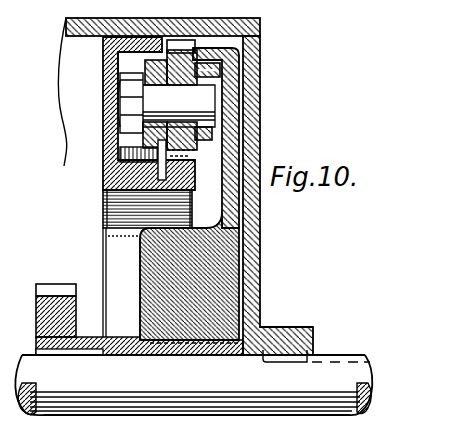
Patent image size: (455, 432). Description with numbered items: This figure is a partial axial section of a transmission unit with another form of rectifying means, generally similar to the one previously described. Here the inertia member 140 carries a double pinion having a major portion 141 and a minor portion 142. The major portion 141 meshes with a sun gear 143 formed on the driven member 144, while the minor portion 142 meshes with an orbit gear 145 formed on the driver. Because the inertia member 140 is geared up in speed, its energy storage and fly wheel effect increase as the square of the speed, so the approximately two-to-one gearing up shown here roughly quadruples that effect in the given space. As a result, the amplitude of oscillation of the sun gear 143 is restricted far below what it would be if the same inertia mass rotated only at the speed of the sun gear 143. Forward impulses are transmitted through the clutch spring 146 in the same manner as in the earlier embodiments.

The inertia member 140 is at (103, 74).
The major portion of double pinion 141 is at (200, 150).
The minor portion of double pinion 142 is at (210, 75).
The sun gear 143 is at (193, 190).
The driven member 144 is at (103, 186).
The orbit gear 145 is at (224, 53).
The clutch spring 146 is at (103, 163).